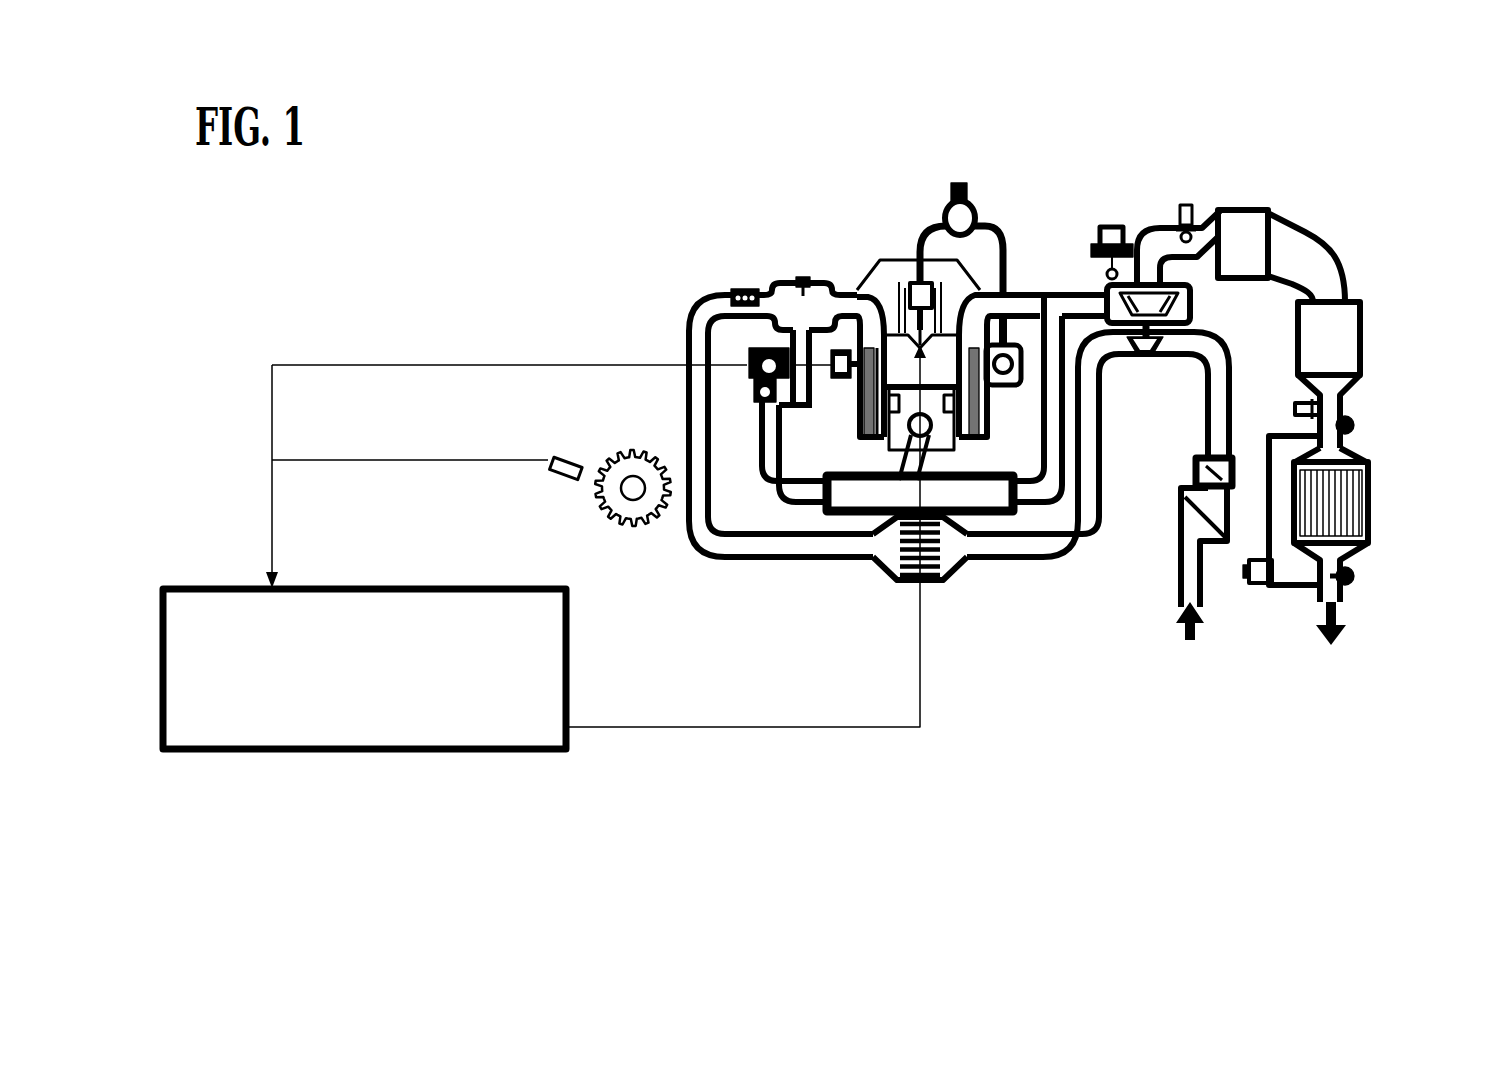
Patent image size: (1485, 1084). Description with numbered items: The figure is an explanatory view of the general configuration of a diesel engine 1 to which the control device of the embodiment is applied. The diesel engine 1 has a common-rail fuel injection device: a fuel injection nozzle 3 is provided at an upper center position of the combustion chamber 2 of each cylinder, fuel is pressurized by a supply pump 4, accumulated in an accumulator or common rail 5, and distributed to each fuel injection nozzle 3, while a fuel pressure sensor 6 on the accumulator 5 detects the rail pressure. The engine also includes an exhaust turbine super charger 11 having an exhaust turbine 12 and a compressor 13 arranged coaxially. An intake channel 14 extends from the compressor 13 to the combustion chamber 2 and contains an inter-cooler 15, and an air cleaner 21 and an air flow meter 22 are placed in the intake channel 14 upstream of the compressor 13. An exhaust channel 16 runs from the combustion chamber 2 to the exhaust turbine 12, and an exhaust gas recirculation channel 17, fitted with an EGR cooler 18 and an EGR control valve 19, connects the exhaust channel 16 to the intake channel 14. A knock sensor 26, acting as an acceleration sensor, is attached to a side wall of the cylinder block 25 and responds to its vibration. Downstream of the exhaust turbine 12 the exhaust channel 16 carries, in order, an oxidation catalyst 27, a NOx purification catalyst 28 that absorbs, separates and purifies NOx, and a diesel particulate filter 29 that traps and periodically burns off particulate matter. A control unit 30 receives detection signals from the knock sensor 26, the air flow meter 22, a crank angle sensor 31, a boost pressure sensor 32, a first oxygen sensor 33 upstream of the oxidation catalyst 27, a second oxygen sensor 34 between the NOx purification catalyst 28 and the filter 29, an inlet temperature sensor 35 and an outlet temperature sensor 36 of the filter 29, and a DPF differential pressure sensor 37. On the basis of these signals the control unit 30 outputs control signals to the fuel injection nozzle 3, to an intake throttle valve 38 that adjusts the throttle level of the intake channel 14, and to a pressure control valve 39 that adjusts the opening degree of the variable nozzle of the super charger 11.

The diesel engine 1 is at (1070, 186).
The combustion chamber 2 is at (960, 370).
The fuel injection nozzle 3 is at (908, 295).
The supply pump 4 is at (1008, 385).
The accumulator (common rail) 5 is at (963, 218).
The fuel pressure sensor 6 is at (968, 192).
The exhaust turbine super charger 11 is at (1183, 403).
The exhaust turbine 12 is at (1190, 301).
The compressor 13 is at (1150, 355).
The intake channel 14 is at (712, 490).
The inter-cooler 15 is at (947, 545).
The exhaust channel 16 is at (1148, 240).
The exhaust gas recirculation (EGR) channel 17 is at (1032, 335).
The EGR cooler 18 is at (990, 476).
The EGR control valve 19 is at (752, 377).
The air cleaner 21 is at (1183, 507).
The air flow meter 22 is at (1195, 468).
The cylinder block 25 is at (855, 440).
The knock sensor 26 is at (847, 385).
The oxidation catalyst 27 is at (1243, 212).
The NOx purification catalyst 28 is at (1342, 340).
The diesel particulate filter (DPF) 29 is at (1370, 492).
The control unit 30 is at (232, 588).
The crank angle sensor 31 is at (570, 455).
The boost pressure sensor 32 is at (803, 275).
The first oxygen sensor 33 is at (1188, 212).
The second oxygen sensor 34 is at (1300, 405).
The inlet temperature sensor 35 is at (1356, 422).
The outlet temperature sensor 36 is at (1356, 576).
The DPF differential pressure sensor 37 is at (1258, 588).
The intake throttle valve 38 is at (744, 290).
The pressure control valve 39 is at (1112, 225).